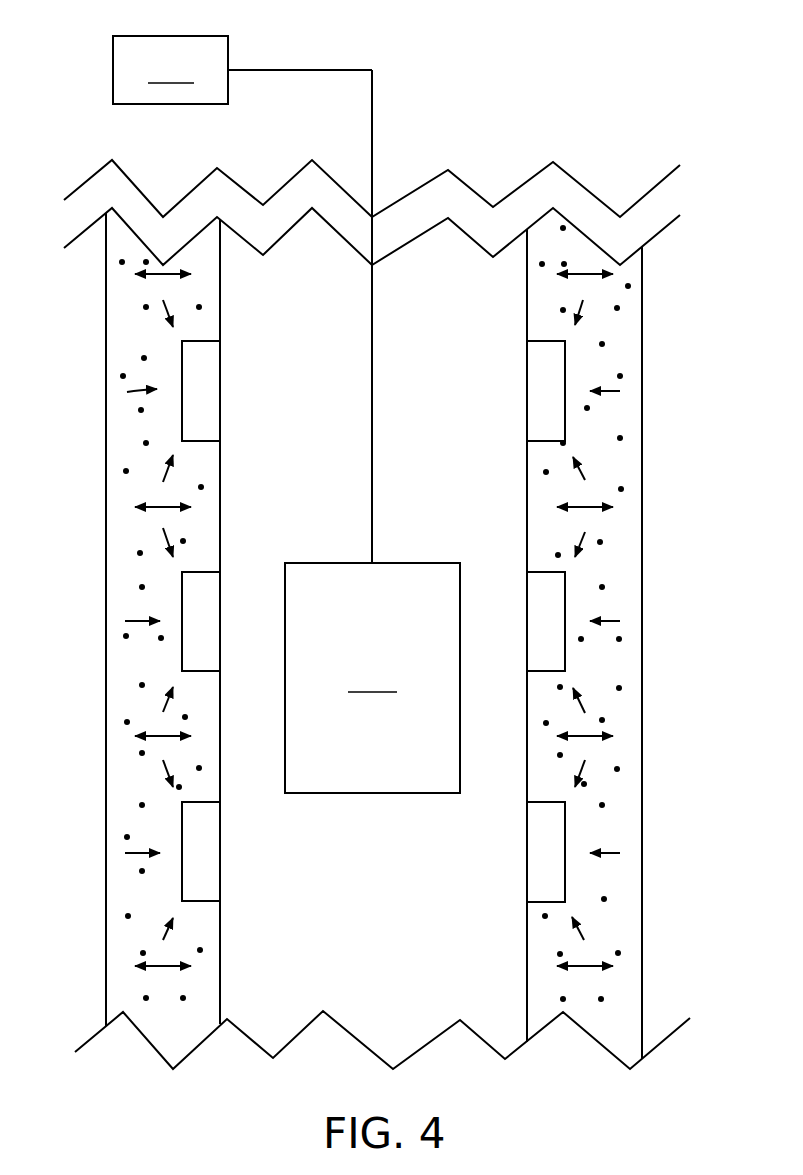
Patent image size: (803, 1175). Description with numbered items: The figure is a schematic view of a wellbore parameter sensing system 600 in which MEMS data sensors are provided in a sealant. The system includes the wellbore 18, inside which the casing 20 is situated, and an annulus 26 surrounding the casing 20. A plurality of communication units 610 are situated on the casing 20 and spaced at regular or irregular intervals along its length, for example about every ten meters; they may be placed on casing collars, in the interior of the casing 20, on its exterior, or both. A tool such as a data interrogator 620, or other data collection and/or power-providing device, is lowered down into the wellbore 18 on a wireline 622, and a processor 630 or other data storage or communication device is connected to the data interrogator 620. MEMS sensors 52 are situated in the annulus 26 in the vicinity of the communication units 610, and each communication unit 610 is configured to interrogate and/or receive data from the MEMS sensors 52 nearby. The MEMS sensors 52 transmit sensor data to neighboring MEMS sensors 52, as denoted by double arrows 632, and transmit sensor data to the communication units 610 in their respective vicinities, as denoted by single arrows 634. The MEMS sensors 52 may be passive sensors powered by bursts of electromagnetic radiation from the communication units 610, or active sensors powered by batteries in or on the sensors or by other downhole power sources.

The wellbore parameter sensing system 600 is at (524, 32).
The wellbore 18 is at (642, 555).
The casing 20 is at (527, 678).
The annulus 26 is at (622, 418).
The MEMS sensors 52 is at (144, 358).
The communication units 610 is at (182, 427).
The data interrogator 620 is at (372, 678).
The wireline 622 is at (373, 482).
The processor 630 is at (242, 70).
The double arrows 632 is at (163, 507).
The single arrows 634 is at (127, 392).